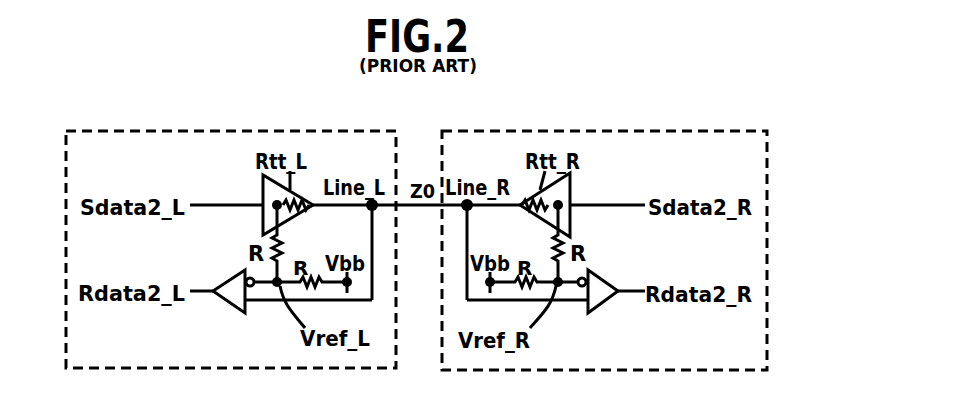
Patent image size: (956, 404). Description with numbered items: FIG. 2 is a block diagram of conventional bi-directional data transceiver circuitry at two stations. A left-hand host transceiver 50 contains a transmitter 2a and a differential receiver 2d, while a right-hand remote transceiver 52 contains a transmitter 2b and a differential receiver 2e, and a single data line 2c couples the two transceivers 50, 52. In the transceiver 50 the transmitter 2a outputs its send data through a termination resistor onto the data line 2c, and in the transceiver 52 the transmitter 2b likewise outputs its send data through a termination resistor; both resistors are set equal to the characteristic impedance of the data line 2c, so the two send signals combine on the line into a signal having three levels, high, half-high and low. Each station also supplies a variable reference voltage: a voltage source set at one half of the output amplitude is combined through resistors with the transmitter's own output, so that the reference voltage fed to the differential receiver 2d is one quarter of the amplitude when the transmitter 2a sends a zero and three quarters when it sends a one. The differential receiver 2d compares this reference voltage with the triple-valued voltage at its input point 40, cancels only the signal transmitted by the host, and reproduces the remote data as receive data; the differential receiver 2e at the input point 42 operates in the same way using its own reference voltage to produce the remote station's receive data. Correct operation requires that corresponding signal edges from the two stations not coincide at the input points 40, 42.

The transceiver 50 is at (210, 130).
The transceiver 52 is at (614, 131).
The transmitter 2a is at (262, 192).
The transmitter 2b is at (572, 190).
The data line 2c is at (398, 207).
The differential receiver 2d is at (230, 312).
The differential receiver 2e is at (598, 307).
The input point 40 is at (374, 209).
The input point 42 is at (466, 209).